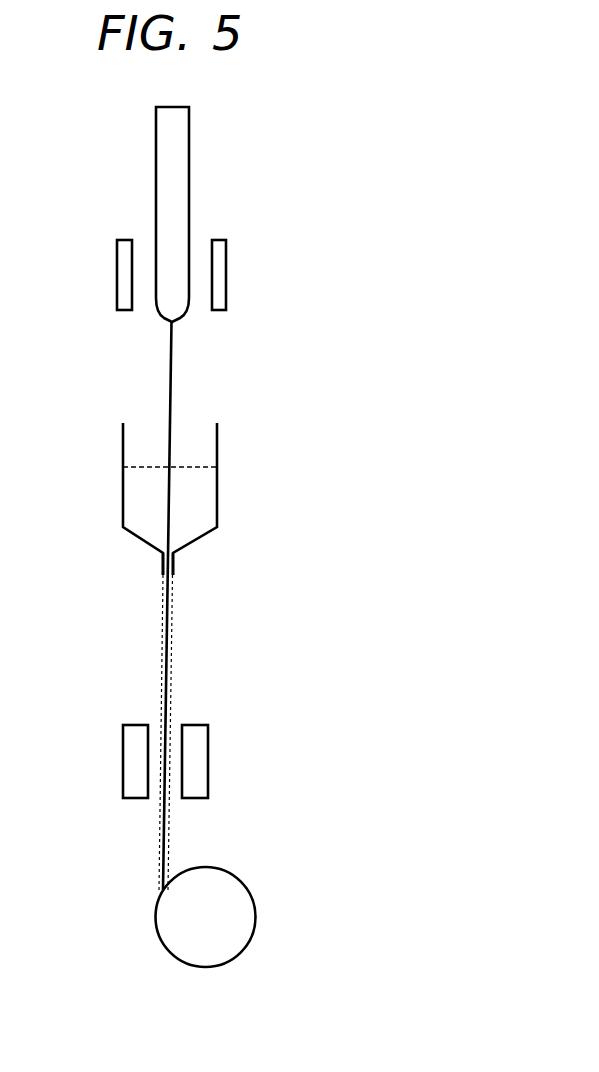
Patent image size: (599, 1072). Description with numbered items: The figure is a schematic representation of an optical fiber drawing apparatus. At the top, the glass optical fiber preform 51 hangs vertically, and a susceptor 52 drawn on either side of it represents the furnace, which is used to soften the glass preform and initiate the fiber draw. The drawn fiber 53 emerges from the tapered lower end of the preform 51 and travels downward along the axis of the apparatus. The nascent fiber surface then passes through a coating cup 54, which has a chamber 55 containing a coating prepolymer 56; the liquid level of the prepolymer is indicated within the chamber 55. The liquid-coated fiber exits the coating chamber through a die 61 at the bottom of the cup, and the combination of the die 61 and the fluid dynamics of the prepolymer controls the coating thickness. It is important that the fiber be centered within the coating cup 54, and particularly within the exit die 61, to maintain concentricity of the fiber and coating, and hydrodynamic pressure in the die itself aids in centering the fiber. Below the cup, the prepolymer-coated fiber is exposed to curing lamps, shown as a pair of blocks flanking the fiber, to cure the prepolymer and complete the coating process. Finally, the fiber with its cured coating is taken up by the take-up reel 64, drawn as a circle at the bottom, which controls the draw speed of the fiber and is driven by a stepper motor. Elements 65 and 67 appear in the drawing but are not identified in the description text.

The preform 51 is at (189, 165).
The susceptor 52 is at (226, 280).
The drawn fiber 53 is at (172, 362).
The coating cup 54 is at (171, 505).
The chamber 55 is at (217, 433).
The coating prepolymer 56 is at (132, 508).
The die 61 is at (163, 556).
The take-up reel 64 is at (173, 672).
The curing unit 65 is at (123, 765).
The take-up reel 67 is at (247, 885).